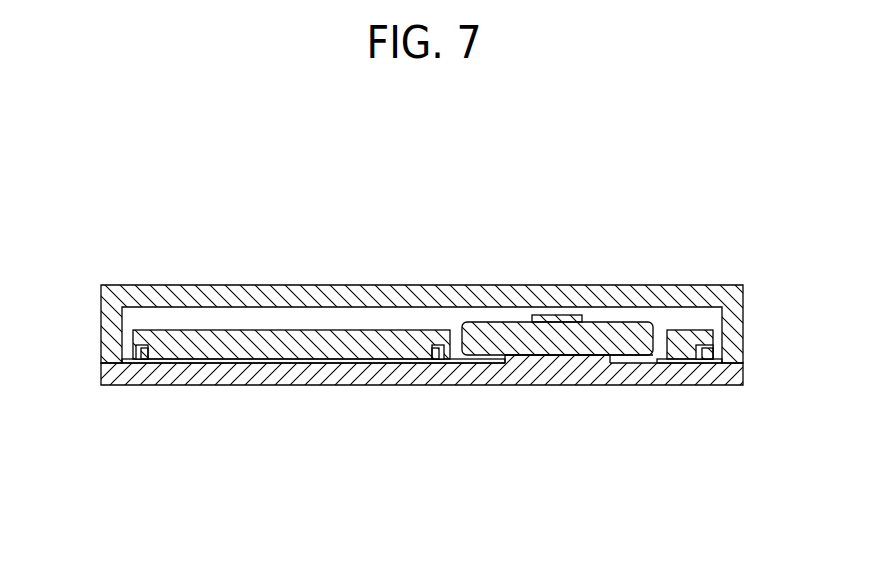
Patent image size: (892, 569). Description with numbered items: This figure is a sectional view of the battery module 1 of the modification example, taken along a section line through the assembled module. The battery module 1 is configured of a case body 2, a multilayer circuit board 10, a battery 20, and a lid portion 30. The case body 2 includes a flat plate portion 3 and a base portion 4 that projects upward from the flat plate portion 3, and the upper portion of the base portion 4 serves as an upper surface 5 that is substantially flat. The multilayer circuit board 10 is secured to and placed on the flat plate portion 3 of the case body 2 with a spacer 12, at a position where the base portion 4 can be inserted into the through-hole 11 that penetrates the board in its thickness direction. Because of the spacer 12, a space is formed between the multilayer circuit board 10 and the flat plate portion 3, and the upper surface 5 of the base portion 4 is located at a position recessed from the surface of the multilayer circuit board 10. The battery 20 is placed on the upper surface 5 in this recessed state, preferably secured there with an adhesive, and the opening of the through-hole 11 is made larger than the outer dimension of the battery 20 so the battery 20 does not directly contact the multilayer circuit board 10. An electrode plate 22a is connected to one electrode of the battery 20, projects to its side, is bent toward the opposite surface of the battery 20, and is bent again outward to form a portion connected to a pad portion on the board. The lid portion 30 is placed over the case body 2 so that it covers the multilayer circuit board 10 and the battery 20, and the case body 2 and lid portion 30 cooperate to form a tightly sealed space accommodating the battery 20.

The battery module 1 is at (137, 207).
The case body 2 is at (733, 375).
The flat plate portion 3 is at (286, 365).
The base portion 4 is at (556, 356).
The upper surface 5 is at (604, 346).
The multilayer circuit board 10 is at (132, 333).
The through-hole 11 is at (658, 364).
The spacer 12 is at (138, 353).
The battery 20 is at (486, 336).
The electrode plate 22a is at (567, 318).
The lid portion 30 is at (288, 291).